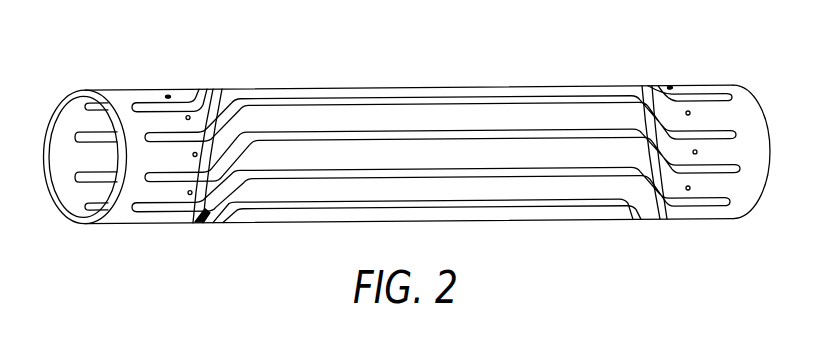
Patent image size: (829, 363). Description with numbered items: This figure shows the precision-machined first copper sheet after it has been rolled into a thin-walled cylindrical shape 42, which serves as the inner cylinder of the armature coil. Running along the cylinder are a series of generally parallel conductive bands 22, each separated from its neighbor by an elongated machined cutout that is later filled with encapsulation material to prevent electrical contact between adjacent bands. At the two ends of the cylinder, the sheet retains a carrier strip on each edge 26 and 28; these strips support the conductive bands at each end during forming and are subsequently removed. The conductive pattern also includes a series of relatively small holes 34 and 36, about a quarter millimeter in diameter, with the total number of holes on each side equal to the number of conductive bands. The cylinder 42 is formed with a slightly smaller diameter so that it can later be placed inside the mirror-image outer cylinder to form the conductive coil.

The conductive bands 22 is at (377, 112).
The carrier strip edge 26 is at (112, 217).
The carrier strip edge 28 is at (737, 214).
The small holes 34 is at (173, 217).
The small holes 36 is at (673, 212).
The thin-walled cylindrical shape 42 is at (568, 44).